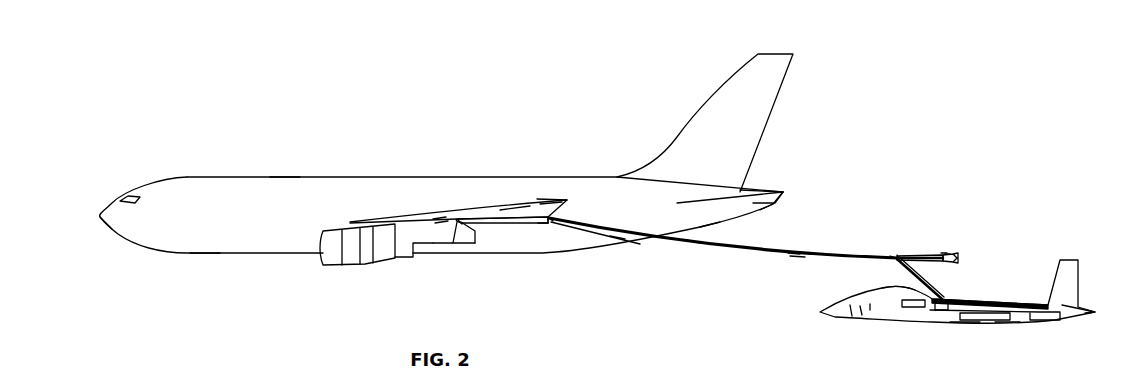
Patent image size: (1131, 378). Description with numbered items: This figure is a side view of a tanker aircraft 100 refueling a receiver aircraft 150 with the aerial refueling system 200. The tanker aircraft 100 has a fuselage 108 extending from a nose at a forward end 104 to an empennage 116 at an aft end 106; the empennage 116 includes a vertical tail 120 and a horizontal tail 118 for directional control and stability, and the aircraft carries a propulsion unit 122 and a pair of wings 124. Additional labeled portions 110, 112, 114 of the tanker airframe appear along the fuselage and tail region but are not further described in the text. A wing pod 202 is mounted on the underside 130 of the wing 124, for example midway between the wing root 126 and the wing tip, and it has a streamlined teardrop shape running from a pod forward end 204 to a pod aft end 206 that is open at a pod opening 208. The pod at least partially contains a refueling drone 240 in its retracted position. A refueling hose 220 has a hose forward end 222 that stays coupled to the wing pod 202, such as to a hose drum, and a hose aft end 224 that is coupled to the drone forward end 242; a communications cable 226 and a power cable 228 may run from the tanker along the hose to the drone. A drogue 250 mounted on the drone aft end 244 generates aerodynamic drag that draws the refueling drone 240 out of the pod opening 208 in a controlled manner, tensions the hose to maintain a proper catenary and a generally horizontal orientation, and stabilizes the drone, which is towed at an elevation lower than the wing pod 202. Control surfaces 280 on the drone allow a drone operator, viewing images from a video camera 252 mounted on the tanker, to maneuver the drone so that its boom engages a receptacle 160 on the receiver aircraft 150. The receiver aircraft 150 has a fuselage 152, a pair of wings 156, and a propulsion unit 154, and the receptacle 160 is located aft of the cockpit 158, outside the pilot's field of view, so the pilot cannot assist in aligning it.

The tanker aircraft 100 is at (188, 177).
The forward end 104 is at (104, 229).
The aft end 106 is at (774, 207).
The fuselage 108 is at (205, 253).
The fuselage top 110 is at (284, 177).
The aft fuselage underside 112 is at (617, 238).
The tail cone 114 is at (711, 225).
The empennage 116 is at (754, 203).
The horizontal tail 118 is at (763, 191).
The vertical tail 120 is at (701, 113).
The propulsion unit 122 is at (332, 266).
The wing 124 is at (430, 243).
The wing root 126 is at (353, 221).
The underside 130 is at (434, 244).
The receiver aircraft 150 is at (1070, 259).
The fuselage 152 is at (1005, 323).
The propulsion unit 154 is at (965, 323).
The wing 156 is at (1000, 301).
The cockpit 158 is at (887, 289).
The receptacle 160 is at (933, 312).
The aerial refueling system 200 is at (754, 250).
The wing pod 202 is at (503, 224).
The pod forward end 204 is at (458, 223).
The pod aft end 206 is at (547, 224).
The pod opening 208 is at (550, 222).
The refueling hose 220 is at (693, 245).
The hose forward end 222 is at (551, 219).
The hose aft end 224 is at (896, 256).
The communications cable 226 is at (794, 253).
The power cable 228 is at (797, 258).
The refueling drone 240 is at (912, 254).
The drone forward end 242 is at (897, 256).
The drone aft end 244 is at (948, 253).
The drogue 250 is at (958, 258).
The video camera 252 is at (903, 261).
The control surface 280 is at (943, 252).